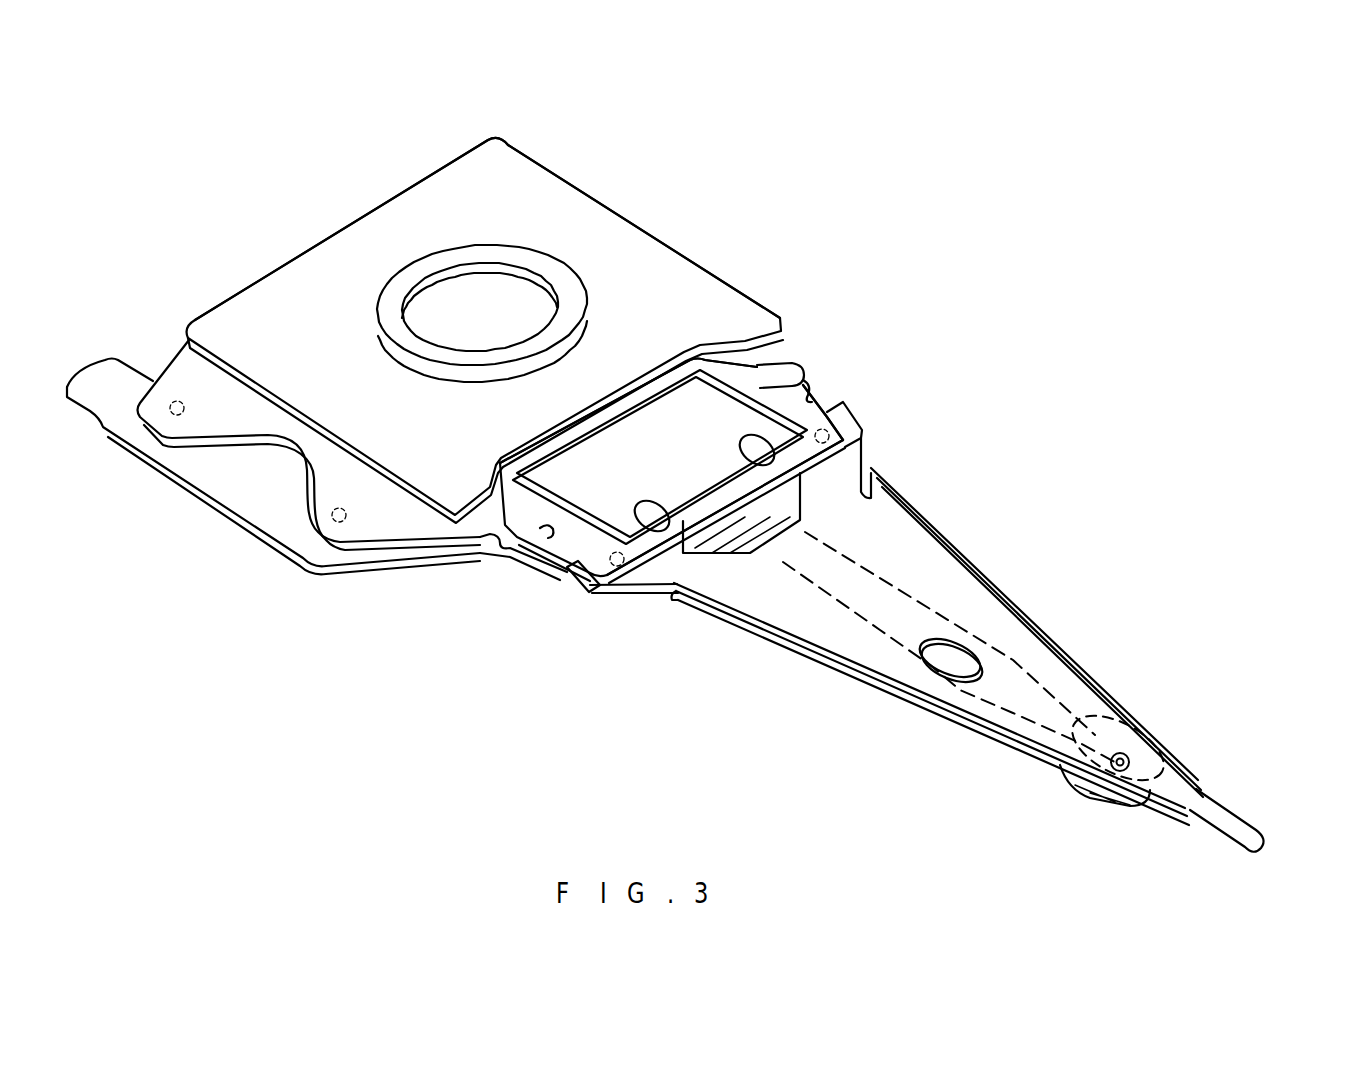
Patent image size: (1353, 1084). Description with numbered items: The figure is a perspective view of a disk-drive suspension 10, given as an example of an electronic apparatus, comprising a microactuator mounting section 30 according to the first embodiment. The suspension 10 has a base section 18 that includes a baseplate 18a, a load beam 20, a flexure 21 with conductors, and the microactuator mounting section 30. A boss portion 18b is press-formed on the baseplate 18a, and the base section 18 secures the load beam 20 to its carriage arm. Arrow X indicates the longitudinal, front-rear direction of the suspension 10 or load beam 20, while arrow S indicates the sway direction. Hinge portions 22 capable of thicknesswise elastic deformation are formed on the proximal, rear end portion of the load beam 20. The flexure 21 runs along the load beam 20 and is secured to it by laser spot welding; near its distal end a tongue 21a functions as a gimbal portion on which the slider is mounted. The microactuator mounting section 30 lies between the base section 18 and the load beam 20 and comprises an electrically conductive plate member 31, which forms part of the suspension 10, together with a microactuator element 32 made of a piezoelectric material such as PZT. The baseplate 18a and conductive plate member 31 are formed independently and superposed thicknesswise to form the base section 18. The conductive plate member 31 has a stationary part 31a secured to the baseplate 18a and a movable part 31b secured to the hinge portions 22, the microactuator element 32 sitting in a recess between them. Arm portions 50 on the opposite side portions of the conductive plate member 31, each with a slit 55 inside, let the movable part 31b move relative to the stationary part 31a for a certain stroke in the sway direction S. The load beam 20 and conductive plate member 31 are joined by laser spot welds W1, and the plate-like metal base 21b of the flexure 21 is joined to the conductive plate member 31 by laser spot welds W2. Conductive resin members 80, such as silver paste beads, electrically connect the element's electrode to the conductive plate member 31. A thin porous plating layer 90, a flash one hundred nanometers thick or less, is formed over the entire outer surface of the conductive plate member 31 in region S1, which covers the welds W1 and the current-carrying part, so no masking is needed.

The suspension 10 is at (885, 125).
The base section 18 is at (712, 250).
The baseplate 18a is at (616, 235).
The boss portion 18b is at (503, 244).
The load beam 20 is at (1012, 652).
The flexure 21 is at (1013, 713).
The tongue 21a is at (1150, 732).
The metal base 21b is at (225, 486).
The hinge portions 22 is at (848, 466).
The microactuator mounting section 30 is at (855, 355).
The conductive plate member 31 is at (788, 347).
The stationary part 31a is at (567, 432).
The movable part 31b is at (705, 565).
The microactuator element 32 is at (634, 443).
The arm portions 50 is at (807, 367).
The slits 55 is at (815, 388).
The conductive resin members 80 is at (742, 440).
The thin porous plating layer 90 is at (797, 510).
The region S1 is at (716, 499).
The laser spot welds W1 is at (832, 428).
The laser spot welds W2 is at (177, 400).
The arrow X is at (888, 778).
The arrow S is at (1342, 856).